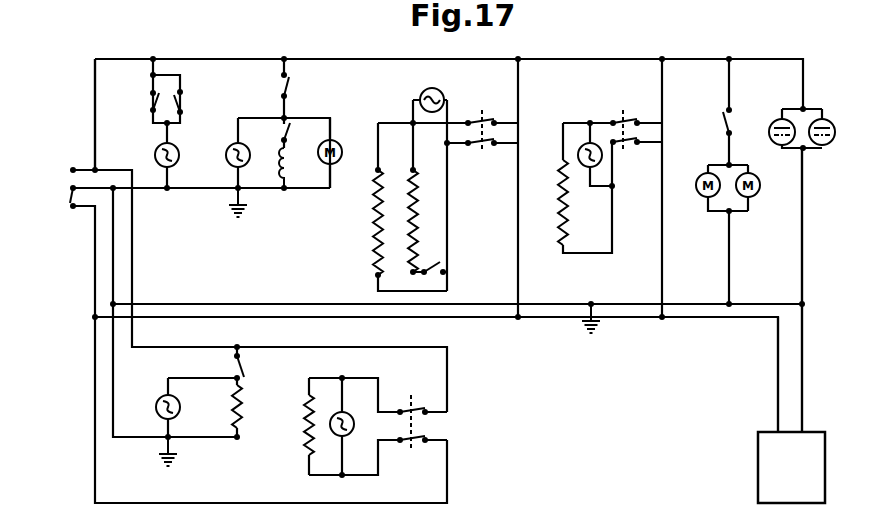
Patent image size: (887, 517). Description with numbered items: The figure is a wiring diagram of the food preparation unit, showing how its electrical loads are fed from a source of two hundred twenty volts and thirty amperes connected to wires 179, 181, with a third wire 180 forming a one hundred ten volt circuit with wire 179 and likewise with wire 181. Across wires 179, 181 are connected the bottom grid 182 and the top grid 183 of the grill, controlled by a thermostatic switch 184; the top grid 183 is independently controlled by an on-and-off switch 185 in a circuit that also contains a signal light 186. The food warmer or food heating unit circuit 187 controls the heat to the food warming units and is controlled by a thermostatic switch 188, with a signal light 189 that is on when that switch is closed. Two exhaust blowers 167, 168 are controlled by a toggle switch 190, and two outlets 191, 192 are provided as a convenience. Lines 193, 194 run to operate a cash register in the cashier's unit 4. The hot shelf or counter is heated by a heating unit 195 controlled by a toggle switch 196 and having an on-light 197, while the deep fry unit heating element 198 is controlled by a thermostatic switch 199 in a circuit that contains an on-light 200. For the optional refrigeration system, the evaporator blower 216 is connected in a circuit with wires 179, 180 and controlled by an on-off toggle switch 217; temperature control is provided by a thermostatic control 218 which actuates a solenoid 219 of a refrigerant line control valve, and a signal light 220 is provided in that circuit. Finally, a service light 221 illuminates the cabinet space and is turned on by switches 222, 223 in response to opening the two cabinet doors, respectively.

The cashier's unit 4 is at (757, 488).
The exhaust blower 167 is at (702, 200).
The exhaust blower 168 is at (756, 198).
The wire 179 is at (82, 167).
The wire 180 is at (76, 189).
The wire 181 is at (74, 210).
The bottom grid 182 is at (372, 254).
The top grid 183 is at (420, 250).
The thermostatic switch 184 is at (484, 118).
The on-and-off switch 185 is at (445, 268).
The signal light 186 is at (441, 92).
The food heating unit circuit 187 is at (558, 216).
The thermostatic switch 188 is at (620, 112).
The signal light 189 is at (583, 180).
The toggle switch 190 is at (735, 107).
The outlet 191 is at (772, 143).
The outlet 192 is at (826, 141).
The line 193 is at (777, 379).
The line 194 is at (803, 390).
The heating unit 195 is at (244, 410).
The toggle switch 196 is at (248, 372).
The on-light 197 is at (158, 397).
The resistor 198 is at (302, 440).
The thermostatic switch 199 is at (416, 402).
The on-light 200 is at (352, 414).
The blower 216 is at (340, 148).
The on-off toggle switch 217 is at (289, 88).
The thermostatic control 218 is at (287, 128).
The solenoid 219 is at (287, 159).
The signal light 220 is at (277, 136).
The service light 221 is at (178, 148).
The switch 222 is at (150, 104).
The switch 223 is at (178, 101).